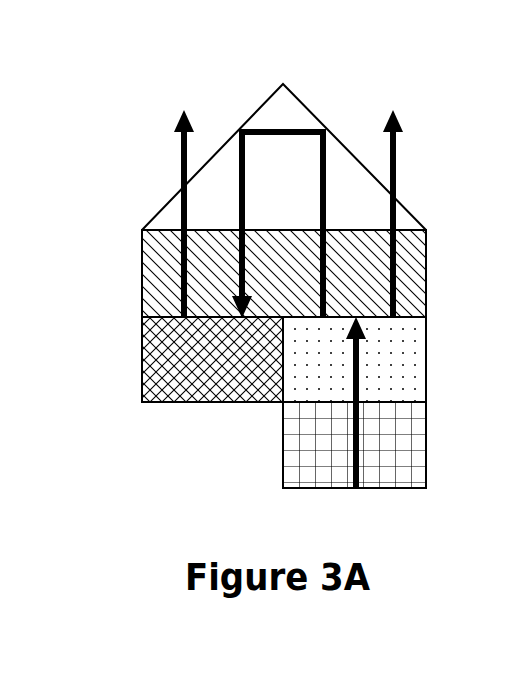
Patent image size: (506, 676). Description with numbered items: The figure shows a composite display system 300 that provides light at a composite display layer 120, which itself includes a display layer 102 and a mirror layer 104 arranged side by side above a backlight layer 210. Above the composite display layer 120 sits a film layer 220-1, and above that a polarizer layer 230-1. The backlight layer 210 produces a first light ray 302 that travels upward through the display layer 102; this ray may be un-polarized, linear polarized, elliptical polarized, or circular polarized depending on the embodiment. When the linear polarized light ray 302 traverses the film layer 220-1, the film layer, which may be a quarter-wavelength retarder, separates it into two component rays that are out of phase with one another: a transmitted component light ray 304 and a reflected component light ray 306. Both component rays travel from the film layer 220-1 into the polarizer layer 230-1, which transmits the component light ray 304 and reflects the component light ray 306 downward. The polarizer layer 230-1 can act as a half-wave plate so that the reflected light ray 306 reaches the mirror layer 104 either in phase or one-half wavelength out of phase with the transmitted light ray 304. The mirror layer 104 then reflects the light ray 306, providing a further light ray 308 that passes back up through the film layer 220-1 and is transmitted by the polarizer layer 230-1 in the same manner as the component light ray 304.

The composite display system 300 is at (319, 49).
The polarizer layer 230-1 is at (282, 83).
The film layer 220-1 is at (141, 278).
The composite display layer 120 is at (96, 326).
The mirror layer 104 is at (141, 352).
The display layer 102 is at (427, 355).
The backlight layer 210 is at (427, 447).
The light ray S2 308 is at (178, 164).
The light ray S1 304 is at (398, 166).
The light ray P1 306 is at (320, 212).
The light ray R1 302 is at (358, 392).